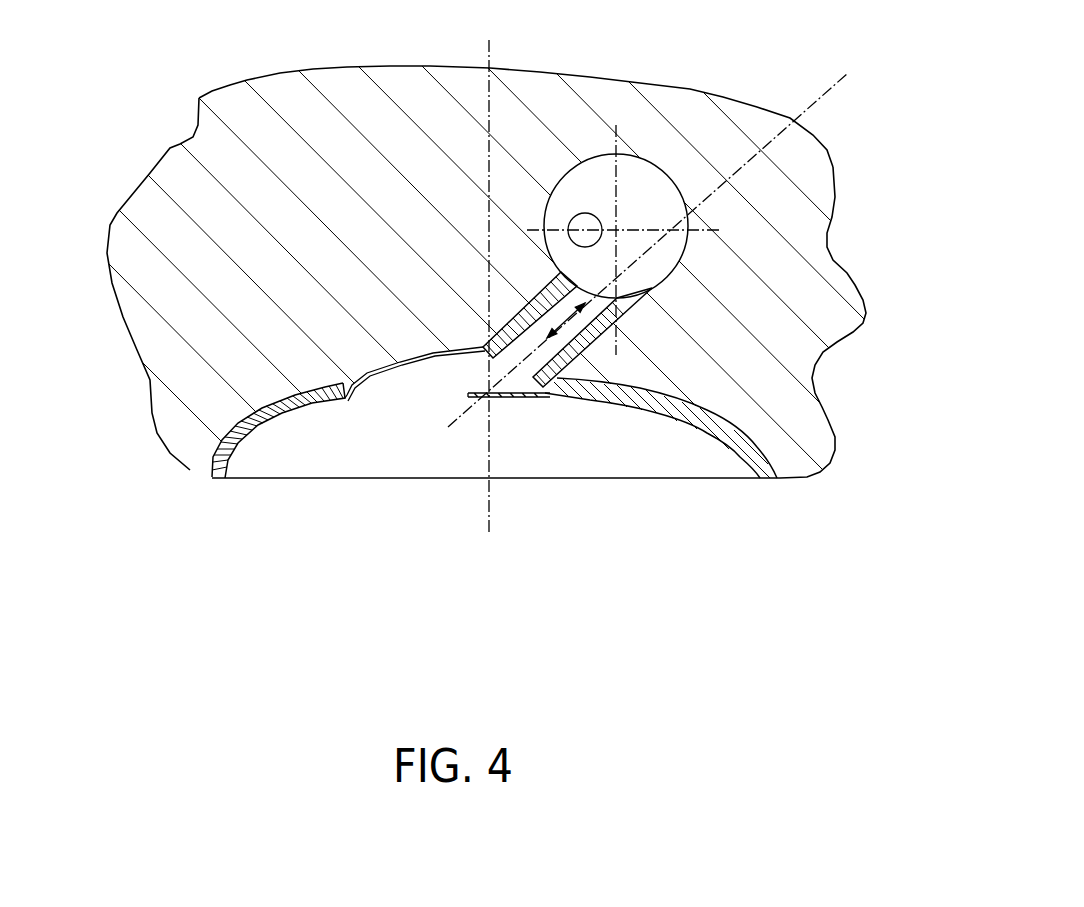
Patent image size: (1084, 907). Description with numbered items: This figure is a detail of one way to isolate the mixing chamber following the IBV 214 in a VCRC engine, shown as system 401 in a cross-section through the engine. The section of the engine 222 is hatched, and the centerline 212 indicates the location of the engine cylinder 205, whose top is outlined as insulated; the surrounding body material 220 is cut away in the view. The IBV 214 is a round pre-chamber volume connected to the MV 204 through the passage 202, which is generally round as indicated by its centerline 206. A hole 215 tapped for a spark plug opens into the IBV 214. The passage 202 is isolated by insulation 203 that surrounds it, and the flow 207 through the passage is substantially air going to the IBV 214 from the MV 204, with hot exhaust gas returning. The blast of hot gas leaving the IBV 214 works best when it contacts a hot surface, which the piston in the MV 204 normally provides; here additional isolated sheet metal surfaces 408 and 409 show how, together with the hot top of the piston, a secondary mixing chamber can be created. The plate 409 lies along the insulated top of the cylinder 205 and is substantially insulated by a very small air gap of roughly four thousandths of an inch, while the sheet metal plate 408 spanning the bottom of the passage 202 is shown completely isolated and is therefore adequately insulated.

The section of the composite part 222 is at (160, 124).
The centerline 212 is at (488, 147).
The body material 220 is at (787, 168).
The MV 204 is at (468, 423).
The system 401 is at (726, 517).
The centerline 206 is at (813, 107).
The IBV 214 is at (657, 170).
The hole 215 is at (572, 223).
The insulation 203 is at (543, 288).
The flow 207 is at (607, 332).
The passage 202 is at (493, 358).
The sheet metal plate 408 is at (490, 397).
The plate 409 is at (405, 357).
The engine cylinder 205 is at (262, 433).